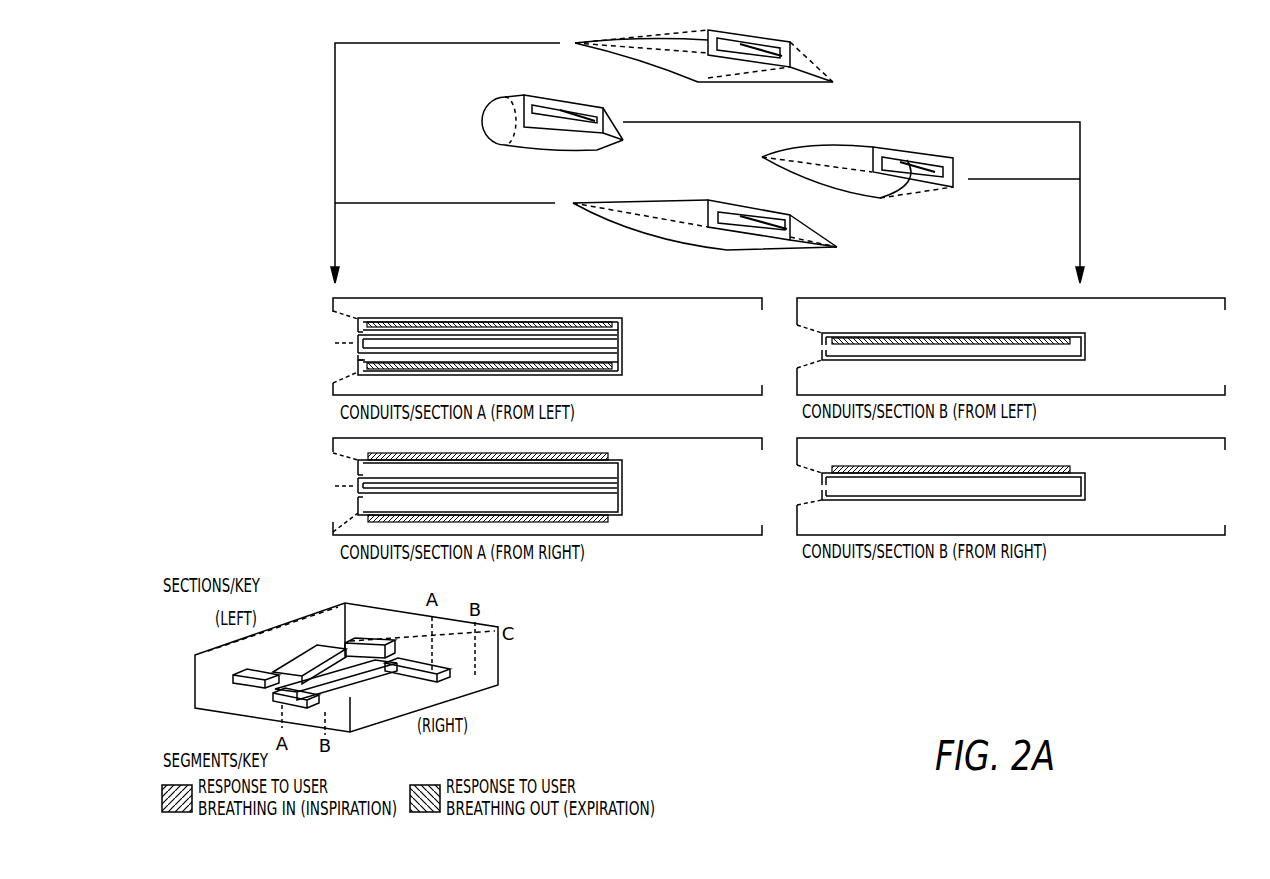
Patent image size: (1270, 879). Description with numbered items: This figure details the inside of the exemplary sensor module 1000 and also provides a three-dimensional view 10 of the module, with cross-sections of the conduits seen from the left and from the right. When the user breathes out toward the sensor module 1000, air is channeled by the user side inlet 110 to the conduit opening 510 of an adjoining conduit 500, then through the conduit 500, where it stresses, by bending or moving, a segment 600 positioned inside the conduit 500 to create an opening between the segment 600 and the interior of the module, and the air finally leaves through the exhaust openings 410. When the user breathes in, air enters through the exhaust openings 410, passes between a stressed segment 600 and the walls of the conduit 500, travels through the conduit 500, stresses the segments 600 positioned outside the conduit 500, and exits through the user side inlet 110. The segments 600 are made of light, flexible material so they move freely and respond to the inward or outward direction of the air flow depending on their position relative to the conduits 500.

The three-dimensional view 10 is at (549, 628).
The user side inlet 110 is at (303, 338).
The exhaust opening 410 is at (1225, 520).
The conduit 500 is at (907, 162).
The conduit opening 510 is at (308, 375).
The segment 600 is at (1065, 377).
The sensor module 1000 is at (342, 296).